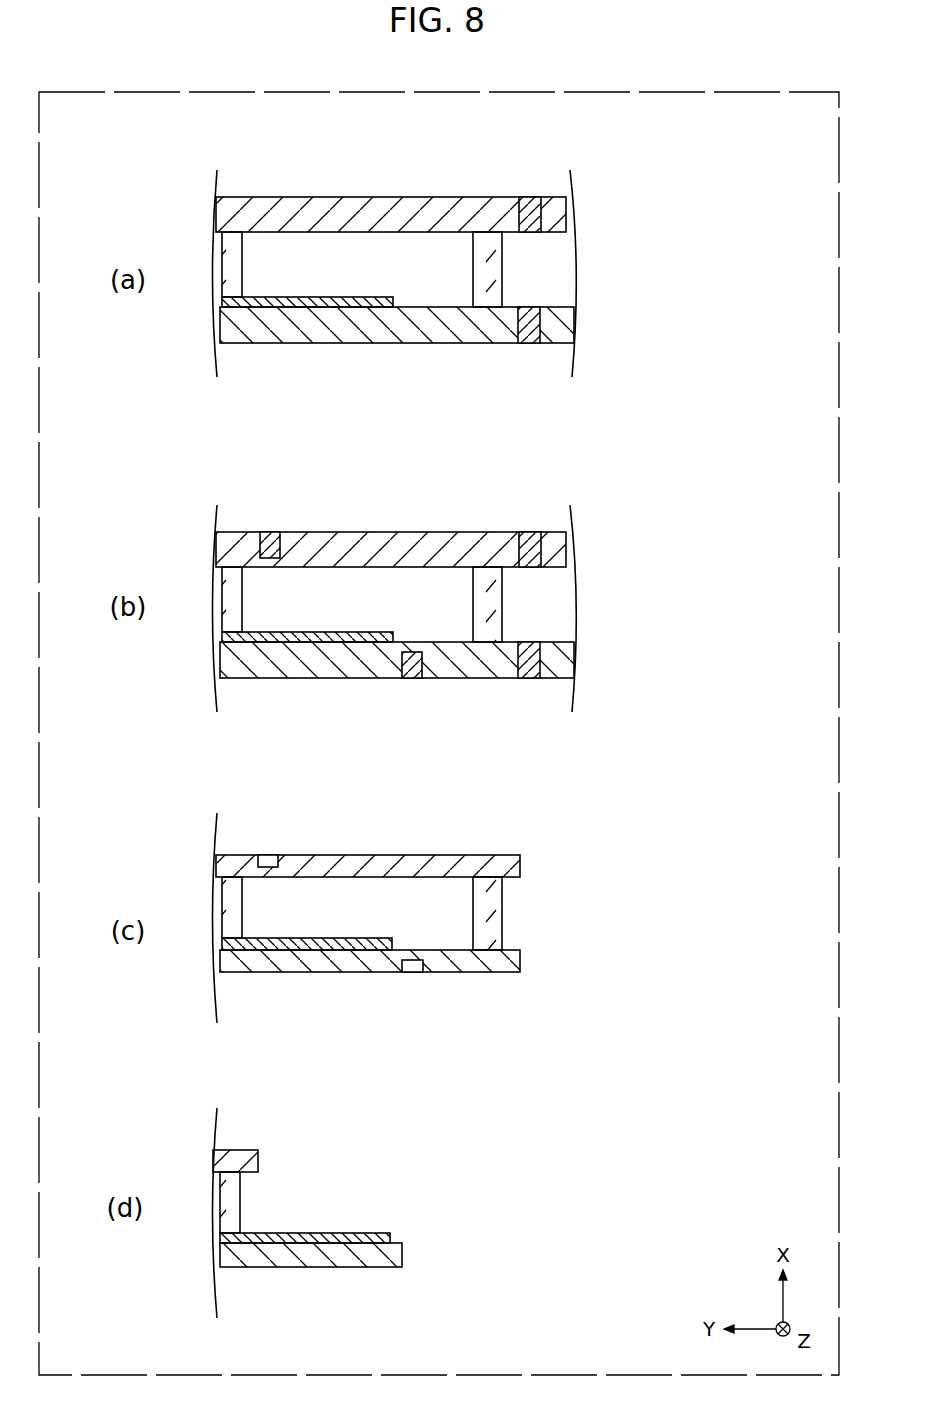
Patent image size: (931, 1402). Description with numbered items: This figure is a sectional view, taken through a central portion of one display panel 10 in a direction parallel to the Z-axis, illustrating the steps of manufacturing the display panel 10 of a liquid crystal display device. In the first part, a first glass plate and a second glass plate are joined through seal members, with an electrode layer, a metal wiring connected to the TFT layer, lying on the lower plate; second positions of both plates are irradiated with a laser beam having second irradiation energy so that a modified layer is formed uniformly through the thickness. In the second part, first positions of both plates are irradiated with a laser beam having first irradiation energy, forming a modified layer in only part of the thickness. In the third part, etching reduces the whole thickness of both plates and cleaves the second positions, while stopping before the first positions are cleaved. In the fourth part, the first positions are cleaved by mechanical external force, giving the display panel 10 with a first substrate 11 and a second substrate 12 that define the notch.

The display panel 10 is at (366, 1206).
The first substrate 11 is at (387, 1257).
The second substrate 12 is at (238, 1162).